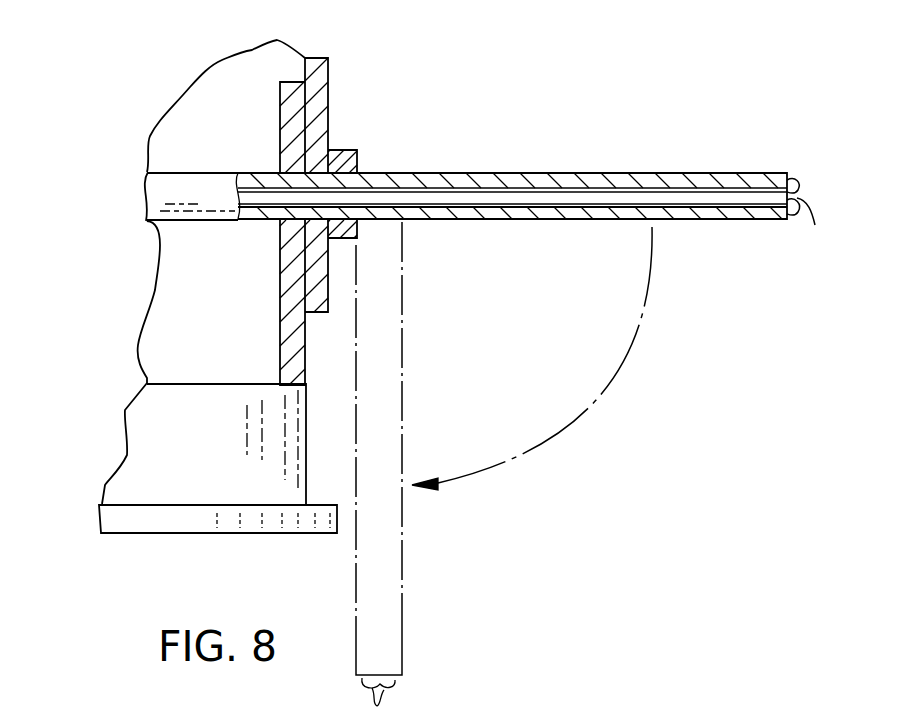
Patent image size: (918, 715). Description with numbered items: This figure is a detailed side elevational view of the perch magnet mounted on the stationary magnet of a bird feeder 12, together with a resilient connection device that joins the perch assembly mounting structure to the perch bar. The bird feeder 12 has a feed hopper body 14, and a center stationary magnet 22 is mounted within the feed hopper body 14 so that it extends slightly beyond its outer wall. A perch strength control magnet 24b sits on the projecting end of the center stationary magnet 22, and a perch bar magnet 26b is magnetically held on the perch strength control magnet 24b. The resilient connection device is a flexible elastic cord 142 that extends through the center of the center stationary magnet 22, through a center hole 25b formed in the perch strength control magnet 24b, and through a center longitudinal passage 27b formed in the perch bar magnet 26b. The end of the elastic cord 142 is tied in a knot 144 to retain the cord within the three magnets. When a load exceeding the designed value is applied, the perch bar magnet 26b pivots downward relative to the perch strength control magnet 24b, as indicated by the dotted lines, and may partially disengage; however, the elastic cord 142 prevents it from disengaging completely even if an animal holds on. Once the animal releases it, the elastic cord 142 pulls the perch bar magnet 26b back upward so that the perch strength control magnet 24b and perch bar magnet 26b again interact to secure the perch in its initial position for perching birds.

The bird feeder 12 is at (150, 460).
The feed hopper body 14 is at (338, 64).
The center stationary magnet 22 is at (198, 185).
The perch strength control magnet 24b is at (358, 160).
The center hole 25b is at (355, 150).
The perch bar magnet 26b is at (718, 220).
The center longitudinal passage 27b is at (600, 173).
The flexible elastic cord 142 is at (485, 197).
The knot 144 is at (800, 187).